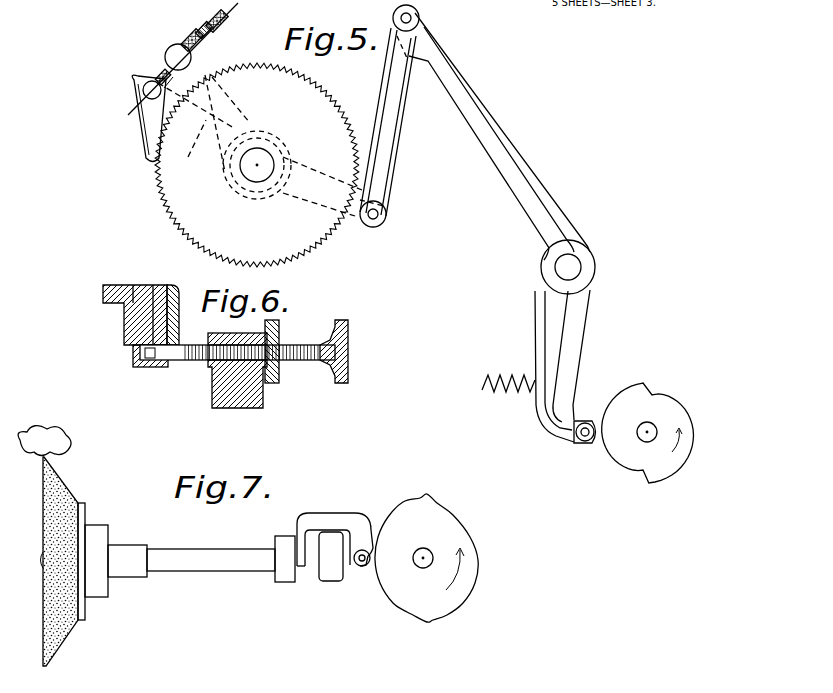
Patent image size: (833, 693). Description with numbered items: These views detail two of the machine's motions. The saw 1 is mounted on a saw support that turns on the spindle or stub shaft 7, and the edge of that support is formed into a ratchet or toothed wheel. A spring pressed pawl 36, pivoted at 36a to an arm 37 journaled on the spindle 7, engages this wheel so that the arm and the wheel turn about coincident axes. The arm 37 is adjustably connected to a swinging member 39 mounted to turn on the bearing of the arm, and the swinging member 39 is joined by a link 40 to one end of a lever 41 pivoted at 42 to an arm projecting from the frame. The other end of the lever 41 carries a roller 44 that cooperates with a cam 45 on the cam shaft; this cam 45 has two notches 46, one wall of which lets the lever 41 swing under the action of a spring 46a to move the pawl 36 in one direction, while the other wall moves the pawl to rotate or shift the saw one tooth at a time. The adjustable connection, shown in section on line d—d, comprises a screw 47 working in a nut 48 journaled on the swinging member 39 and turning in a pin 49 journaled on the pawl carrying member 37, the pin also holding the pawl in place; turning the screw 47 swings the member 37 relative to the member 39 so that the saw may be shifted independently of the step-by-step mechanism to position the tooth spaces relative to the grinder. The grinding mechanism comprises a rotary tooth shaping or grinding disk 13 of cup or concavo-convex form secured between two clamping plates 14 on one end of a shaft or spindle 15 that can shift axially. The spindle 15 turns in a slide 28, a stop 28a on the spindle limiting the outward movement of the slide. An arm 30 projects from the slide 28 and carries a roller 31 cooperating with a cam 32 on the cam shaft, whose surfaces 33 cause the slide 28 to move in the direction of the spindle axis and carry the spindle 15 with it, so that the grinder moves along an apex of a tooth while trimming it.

In FIG. 5, the spindle or stub shaft 7 is at (256, 172).
In FIG. 5, the spring pressed pawl 36 is at (147, 140).
In FIG. 6, the spring pressed pawl 36 is at (113, 285).
In FIG. 5, the pawl pivot 36a is at (147, 81).
In FIG. 6, the pawl pivot 36a is at (152, 285).
In FIG. 5, the arm 37 is at (197, 145).
In FIG. 6, the arm 37 is at (127, 323).
In FIG. 5, the swinging member 39 is at (232, 100).
In FIG. 6, the swinging member 39 is at (265, 393).
In FIG. 5, the link 40 is at (393, 152).
In FIG. 5, the lever 41 is at (509, 163).
In FIG. 5, the lever pivot 42 is at (577, 262).
In FIG. 5, the roller 44 is at (578, 443).
In FIG. 5, the cam 45 is at (636, 424).
In FIG. 5, the notches 46 is at (654, 392).
In FIG. 5, the spring 46a is at (490, 392).
In FIG. 5, the screw 47 is at (208, 36).
In FIG. 6, the screw 47 is at (298, 345).
In FIG. 5, the nut 48 is at (194, 36).
In FIG. 6, the nut 48 is at (281, 319).
In FIG. 6, the pin 49 is at (135, 347).
In FIG. 5, the section line d— d is at (177, 65).
In FIG. 7, the saw 1 is at (44, 441).
In FIG. 7, the rotary tooth shaping or grinding disk 13 is at (62, 491).
In FIG. 7, the clamping plates 14 is at (84, 512).
In FIG. 7, the shaft or spindle 15 is at (234, 562).
In FIG. 7, the slide 28 is at (305, 573).
In FIG. 7, the stop 28a is at (333, 577).
In FIG. 7, the arm 30 is at (350, 526).
In FIG. 7, the roller 31 is at (360, 567).
In FIG. 7, the cam 32 is at (426, 558).
In FIG. 7, the cam surfaces 33 is at (401, 503).